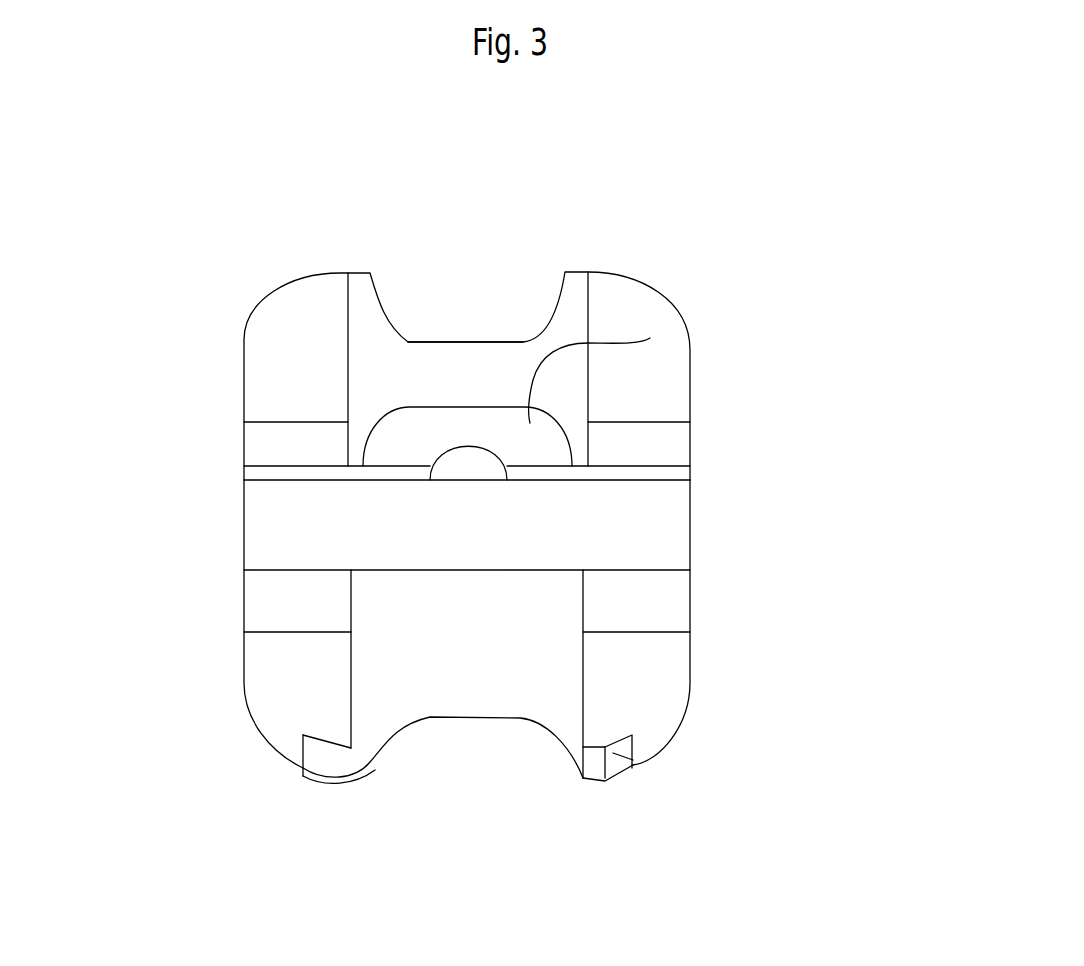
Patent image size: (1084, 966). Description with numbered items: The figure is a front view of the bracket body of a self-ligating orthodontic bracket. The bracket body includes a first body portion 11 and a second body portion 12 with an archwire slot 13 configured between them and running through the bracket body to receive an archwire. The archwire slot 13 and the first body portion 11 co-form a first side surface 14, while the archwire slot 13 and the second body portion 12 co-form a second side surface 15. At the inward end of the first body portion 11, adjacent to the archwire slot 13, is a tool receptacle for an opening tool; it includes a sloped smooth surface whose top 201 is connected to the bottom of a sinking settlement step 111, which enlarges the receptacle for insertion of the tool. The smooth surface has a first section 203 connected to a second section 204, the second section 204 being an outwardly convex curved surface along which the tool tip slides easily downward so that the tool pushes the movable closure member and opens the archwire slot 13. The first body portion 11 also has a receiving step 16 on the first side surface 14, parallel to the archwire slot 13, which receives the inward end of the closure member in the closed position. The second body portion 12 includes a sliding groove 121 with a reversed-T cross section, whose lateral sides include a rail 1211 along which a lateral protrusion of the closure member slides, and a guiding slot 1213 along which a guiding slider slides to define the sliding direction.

The first body portion 11 is at (633, 390).
The sinking settlement step 111 is at (650, 338).
The second body portion 12 is at (653, 673).
The sliding groove 121 is at (450, 633).
The rail 1211 is at (632, 758).
The guiding slot 1213 is at (597, 780).
The archwire slot 13 is at (643, 530).
The first side surface 14 is at (646, 478).
The second side surface 15 is at (645, 568).
The receiving step 16 is at (327, 473).
The top of the smooth surface 201 is at (468, 417).
The first section 203 is at (447, 437).
The second section 204 is at (455, 474).